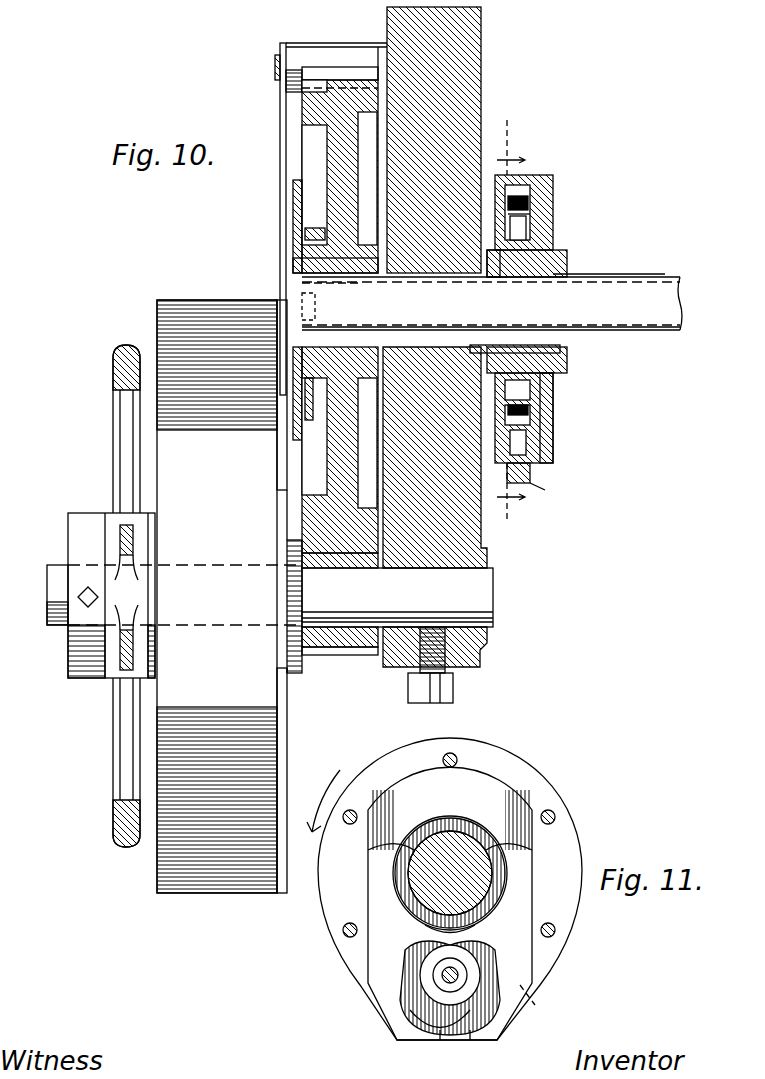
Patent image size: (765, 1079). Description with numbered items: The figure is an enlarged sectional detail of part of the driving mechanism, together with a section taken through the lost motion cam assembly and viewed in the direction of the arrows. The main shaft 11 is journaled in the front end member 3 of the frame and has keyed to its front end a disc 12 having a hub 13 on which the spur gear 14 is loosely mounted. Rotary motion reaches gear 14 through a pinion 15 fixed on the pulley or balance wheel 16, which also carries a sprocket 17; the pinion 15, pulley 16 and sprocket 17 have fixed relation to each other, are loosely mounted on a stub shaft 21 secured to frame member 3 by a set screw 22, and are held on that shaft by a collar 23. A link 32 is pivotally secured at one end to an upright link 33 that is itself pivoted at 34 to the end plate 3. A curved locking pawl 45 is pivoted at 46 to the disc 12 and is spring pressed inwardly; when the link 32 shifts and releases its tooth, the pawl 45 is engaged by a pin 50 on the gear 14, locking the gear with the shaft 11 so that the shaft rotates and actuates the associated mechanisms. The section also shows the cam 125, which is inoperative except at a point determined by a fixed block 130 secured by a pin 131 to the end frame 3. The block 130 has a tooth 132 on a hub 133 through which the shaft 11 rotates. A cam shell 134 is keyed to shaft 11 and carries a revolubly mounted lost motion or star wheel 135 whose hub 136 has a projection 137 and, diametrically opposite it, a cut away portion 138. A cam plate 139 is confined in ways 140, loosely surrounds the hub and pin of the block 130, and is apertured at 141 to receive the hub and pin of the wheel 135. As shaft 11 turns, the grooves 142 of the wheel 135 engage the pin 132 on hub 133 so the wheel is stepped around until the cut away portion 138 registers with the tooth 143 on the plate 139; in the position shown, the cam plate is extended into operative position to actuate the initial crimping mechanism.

In FIG. 10, the front end member 3 is at (481, 110).
In FIG. 10, the shaft 11 is at (604, 360).
In FIG. 11, the shaft 11 is at (490, 875).
In FIG. 10, the disc 12 is at (298, 195).
In FIG. 10, the hub 13 is at (378, 273).
In FIG. 10, the spur gear 14 is at (318, 68).
In FIG. 10, the pinion 15 is at (342, 655).
In FIG. 10, the pulley or balance wheel 16 is at (277, 730).
In FIG. 10, the sprocket 17 is at (113, 470).
In FIG. 10, the stub shaft 21 is at (490, 605).
In FIG. 10, the set screw 22 is at (455, 686).
In FIG. 10, the collar 23 is at (60, 630).
In FIG. 10, the link 32 is at (285, 420).
In FIG. 10, the upright link 33 is at (280, 150).
In FIG. 10, the pivot 34 is at (345, 58).
In FIG. 10, the curved locking pawl 45 is at (309, 420).
In FIG. 10, the pivot 46 is at (315, 318).
In FIG. 10, the pin 50 is at (310, 228).
In FIG. 10, the cam 125 is at (553, 425).
In FIG. 11, the cam 125 is at (545, 985).
In FIG. 10, the fixed block 130 is at (500, 280).
In FIG. 10, the pin 131 is at (498, 345).
In FIG. 10, the tooth 132 is at (553, 385).
In FIG. 11, the tooth 132 is at (430, 925).
In FIG. 10, the hub 133 is at (555, 240).
In FIG. 11, the hub 133 is at (420, 890).
In FIG. 10, the cam shell 134 is at (553, 200).
In FIG. 11, the cam shell 134 is at (532, 775).
In FIG. 10, the lost motion or star wheel 135 is at (543, 445).
In FIG. 11, the lost motion or star wheel 135 is at (435, 985).
In FIG. 11, the hub 136 is at (435, 1000).
In FIG. 11, the projection 137 is at (450, 1035).
In FIG. 11, the cut away portion 138 is at (410, 950).
In FIG. 10, the cam plate 139 is at (540, 485).
In FIG. 11, the cam plate 139 is at (505, 1010).
In FIG. 11, the ways 140 is at (368, 840).
In FIG. 11, the aperture 141 is at (430, 1030).
In FIG. 11, the grooves 142 is at (470, 1035).
In FIG. 11, the tooth 143 is at (442, 972).